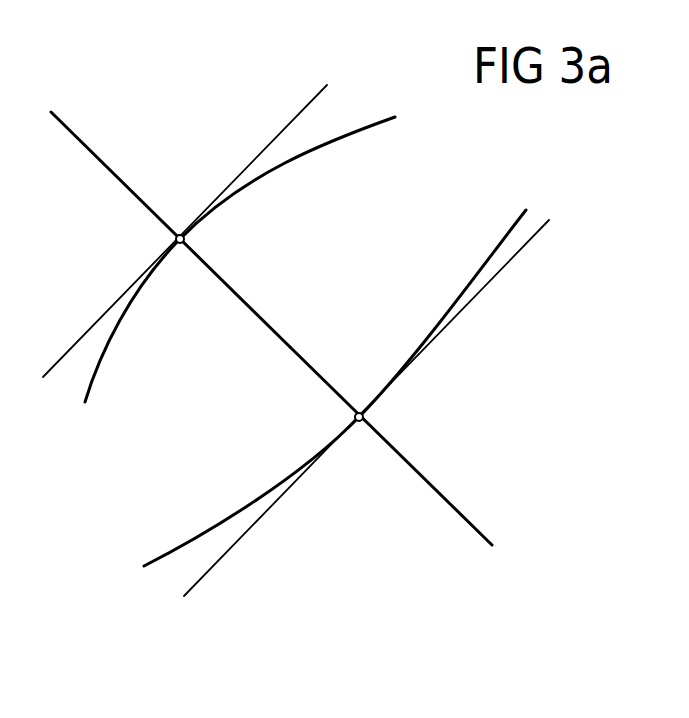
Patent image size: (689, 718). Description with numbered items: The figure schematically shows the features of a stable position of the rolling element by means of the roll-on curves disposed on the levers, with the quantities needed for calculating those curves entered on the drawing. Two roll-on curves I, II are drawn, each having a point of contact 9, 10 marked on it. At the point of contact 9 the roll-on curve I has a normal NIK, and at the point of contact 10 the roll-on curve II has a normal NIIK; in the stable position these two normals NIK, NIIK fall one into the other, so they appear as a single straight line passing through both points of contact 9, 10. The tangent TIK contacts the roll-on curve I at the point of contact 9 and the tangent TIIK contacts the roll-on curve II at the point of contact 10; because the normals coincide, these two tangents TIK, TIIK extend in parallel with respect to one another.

The point of contact 9 is at (364, 418).
The point of contact 10 is at (176, 239).
The roll-on curve I is at (466, 298).
The roll-on curve II is at (308, 145).
The tangent TIK is at (233, 546).
The tangent TIIK is at (242, 168).
The normal NIK is at (273, 336).
The normal NIIK is at (238, 296).